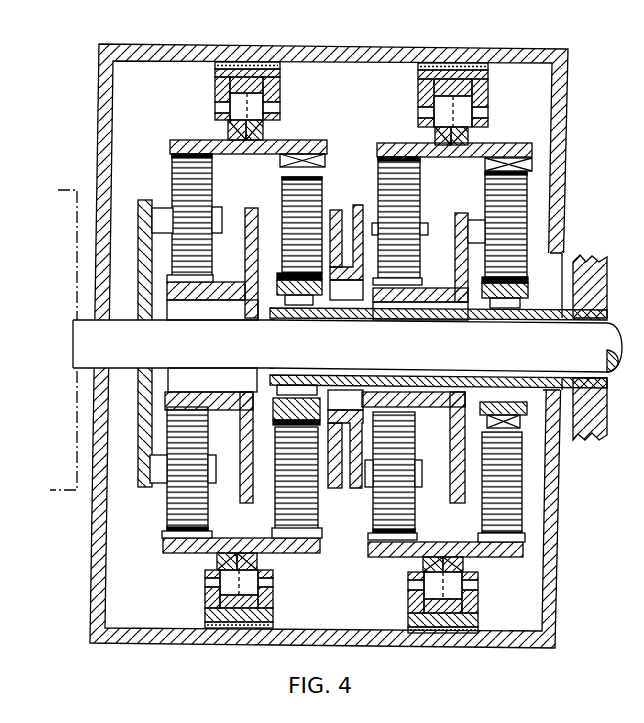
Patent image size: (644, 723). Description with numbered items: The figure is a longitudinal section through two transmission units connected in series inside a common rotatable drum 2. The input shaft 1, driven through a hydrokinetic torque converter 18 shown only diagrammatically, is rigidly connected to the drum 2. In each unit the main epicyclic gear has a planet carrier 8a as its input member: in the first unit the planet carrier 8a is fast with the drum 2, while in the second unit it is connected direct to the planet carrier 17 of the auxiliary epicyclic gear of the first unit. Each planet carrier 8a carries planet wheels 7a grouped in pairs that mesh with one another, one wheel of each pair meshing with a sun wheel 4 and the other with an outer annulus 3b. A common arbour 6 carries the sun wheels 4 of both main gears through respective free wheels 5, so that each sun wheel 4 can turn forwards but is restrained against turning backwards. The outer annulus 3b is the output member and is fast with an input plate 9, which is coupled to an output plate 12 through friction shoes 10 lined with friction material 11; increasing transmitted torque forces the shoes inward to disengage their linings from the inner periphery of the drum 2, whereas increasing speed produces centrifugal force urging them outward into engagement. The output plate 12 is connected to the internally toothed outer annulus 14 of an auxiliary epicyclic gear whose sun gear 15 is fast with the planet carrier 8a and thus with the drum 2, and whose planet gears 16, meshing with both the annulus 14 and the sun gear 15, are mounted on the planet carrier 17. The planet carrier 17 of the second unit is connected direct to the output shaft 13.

The input shaft 1 is at (88, 340).
The rotatable drum 2 is at (372, 48).
The outer annulus 3b is at (282, 162).
The sun wheel 4 is at (263, 390).
The free wheel 5 is at (297, 302).
The common arbour 6 is at (606, 313).
The planet wheels 7a is at (282, 193).
The planet carrier 8a is at (337, 209).
The input plate 9 is at (258, 137).
The friction shoes 10 is at (281, 93).
The friction material 11 is at (233, 62).
The output plate 12 is at (232, 137).
The output shaft 13 is at (577, 355).
The internally toothed outer annulus 14 is at (172, 160).
The sun gear 15 is at (210, 277).
The planet gears 16 is at (421, 192).
The planet carrier 17 is at (140, 205).
The hydrokinetic torque converter 18 is at (62, 190).